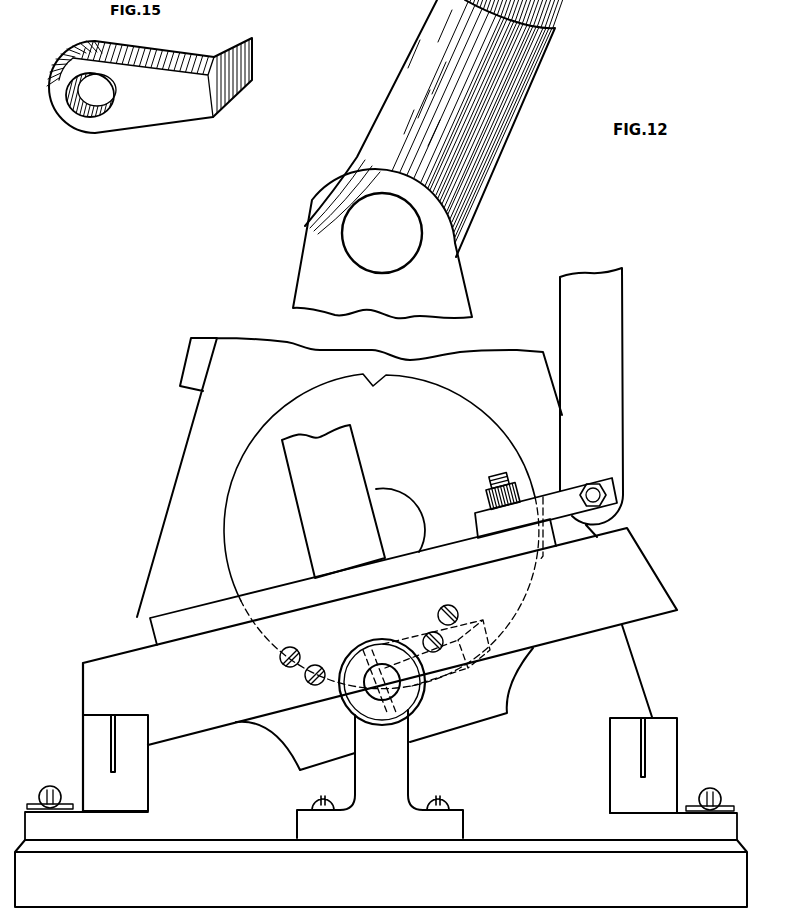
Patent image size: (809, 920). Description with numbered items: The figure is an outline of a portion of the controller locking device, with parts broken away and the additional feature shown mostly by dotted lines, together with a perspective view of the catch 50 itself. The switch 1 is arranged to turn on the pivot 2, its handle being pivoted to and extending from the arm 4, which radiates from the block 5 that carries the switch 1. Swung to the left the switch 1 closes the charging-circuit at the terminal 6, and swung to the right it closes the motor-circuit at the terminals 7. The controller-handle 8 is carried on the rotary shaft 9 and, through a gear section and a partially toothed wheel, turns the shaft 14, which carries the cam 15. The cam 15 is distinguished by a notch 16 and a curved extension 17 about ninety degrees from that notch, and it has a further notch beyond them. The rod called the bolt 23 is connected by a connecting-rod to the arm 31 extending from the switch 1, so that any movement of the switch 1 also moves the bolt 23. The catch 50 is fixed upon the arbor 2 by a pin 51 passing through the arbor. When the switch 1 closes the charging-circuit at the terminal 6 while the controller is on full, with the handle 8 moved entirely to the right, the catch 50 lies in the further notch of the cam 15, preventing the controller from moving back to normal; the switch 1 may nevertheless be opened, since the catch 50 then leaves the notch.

In FIG. 12, the switch 1 is at (380, 669).
In FIG. 12, the pivot 2 is at (364, 695).
In FIG. 12, the arm 4 is at (333, 501).
In FIG. 12, the block 5 is at (353, 582).
In FIG. 12, the terminal 6 is at (115, 763).
In FIG. 12, the terminals 7 is at (643, 765).
In FIG. 12, the controller-handle 8 is at (508, 120).
In FIG. 12, the rotary shaft 9 is at (382, 243).
In FIG. 12, the shaft 14 is at (400, 520).
In FIG. 12, the cam 15 is at (394, 527).
In FIG. 12, the notch 16 is at (379, 384).
In FIG. 12, the curved extension 17 is at (544, 559).
In FIG. 12, the bolt 23 is at (591, 402).
In FIG. 12, the arm 31 is at (546, 504).
In FIG. 15, the catch 50 is at (149, 84).
In FIG. 12, the catch 50 is at (455, 684).
In FIG. 12, the pin 51 is at (393, 716).